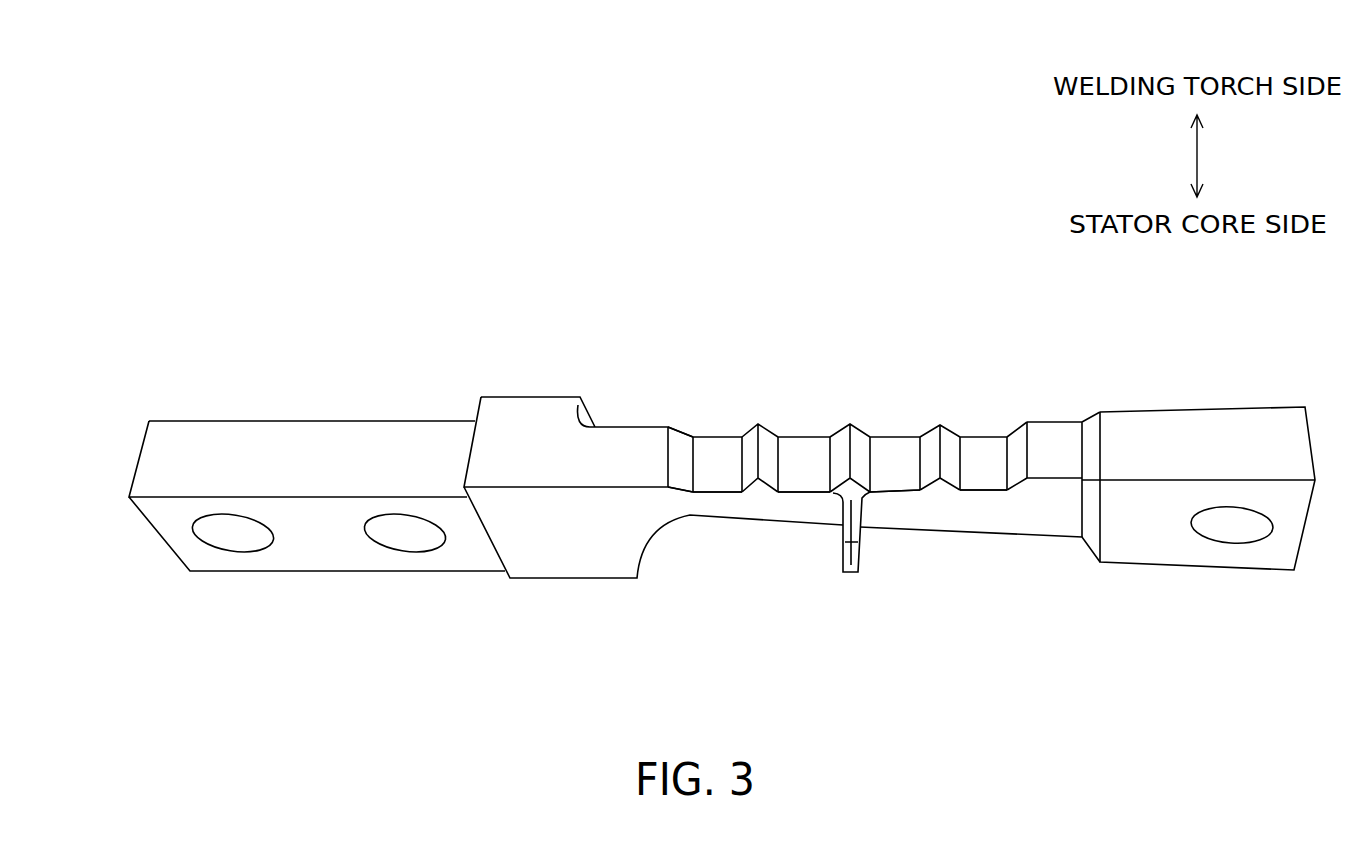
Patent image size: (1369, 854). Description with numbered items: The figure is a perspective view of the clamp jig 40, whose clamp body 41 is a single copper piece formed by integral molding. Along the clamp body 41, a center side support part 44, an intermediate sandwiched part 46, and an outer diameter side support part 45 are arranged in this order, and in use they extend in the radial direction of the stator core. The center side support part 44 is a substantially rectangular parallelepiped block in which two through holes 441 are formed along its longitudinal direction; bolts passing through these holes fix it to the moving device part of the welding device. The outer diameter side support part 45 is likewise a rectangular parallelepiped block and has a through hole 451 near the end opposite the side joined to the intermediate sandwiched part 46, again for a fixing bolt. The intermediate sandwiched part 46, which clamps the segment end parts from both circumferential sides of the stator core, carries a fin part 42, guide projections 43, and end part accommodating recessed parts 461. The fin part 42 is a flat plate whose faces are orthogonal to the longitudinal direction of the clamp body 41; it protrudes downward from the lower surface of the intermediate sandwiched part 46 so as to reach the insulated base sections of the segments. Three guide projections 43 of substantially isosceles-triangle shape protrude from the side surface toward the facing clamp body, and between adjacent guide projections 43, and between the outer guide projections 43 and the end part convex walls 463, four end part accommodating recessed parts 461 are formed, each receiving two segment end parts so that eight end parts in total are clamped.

The clamp jig 40 is at (198, 296).
The clamp body 41 is at (903, 530).
The fin part 42 is at (850, 573).
The guide projection 43 is at (940, 440).
The center side support part 44 is at (310, 563).
The through hole 441 is at (222, 539).
The outer diameter side support part 45 is at (1198, 563).
The through hole 451 is at (1243, 532).
The intermediate sandwiched part 46 is at (667, 527).
The end part accommodating recessed part 461 is at (807, 478).
The end part convex wall 463 is at (682, 447).